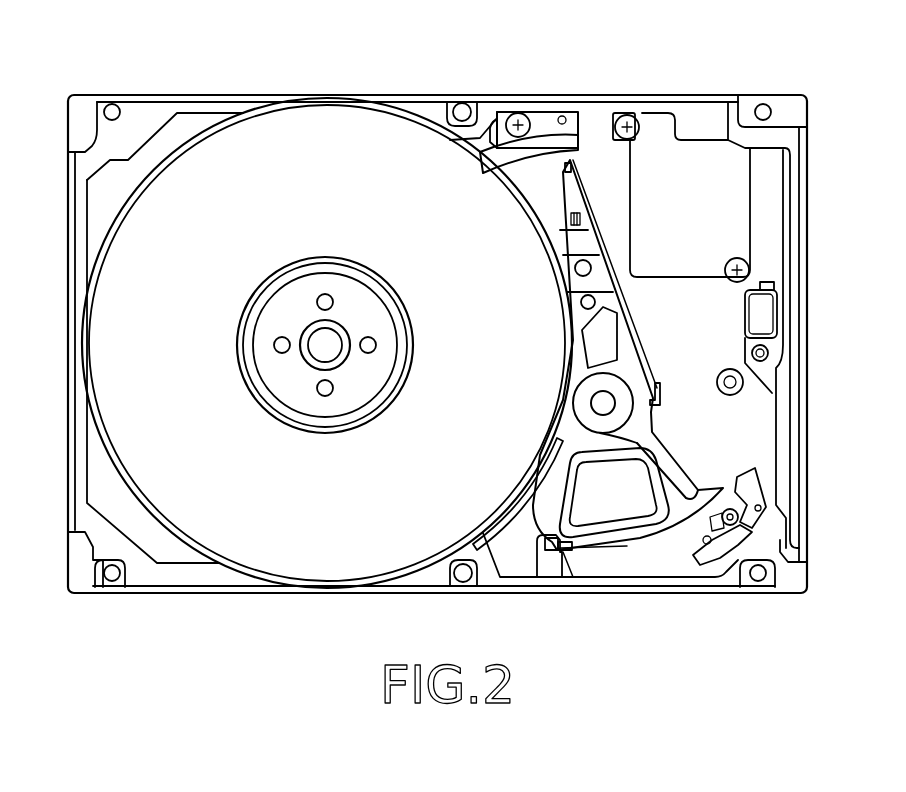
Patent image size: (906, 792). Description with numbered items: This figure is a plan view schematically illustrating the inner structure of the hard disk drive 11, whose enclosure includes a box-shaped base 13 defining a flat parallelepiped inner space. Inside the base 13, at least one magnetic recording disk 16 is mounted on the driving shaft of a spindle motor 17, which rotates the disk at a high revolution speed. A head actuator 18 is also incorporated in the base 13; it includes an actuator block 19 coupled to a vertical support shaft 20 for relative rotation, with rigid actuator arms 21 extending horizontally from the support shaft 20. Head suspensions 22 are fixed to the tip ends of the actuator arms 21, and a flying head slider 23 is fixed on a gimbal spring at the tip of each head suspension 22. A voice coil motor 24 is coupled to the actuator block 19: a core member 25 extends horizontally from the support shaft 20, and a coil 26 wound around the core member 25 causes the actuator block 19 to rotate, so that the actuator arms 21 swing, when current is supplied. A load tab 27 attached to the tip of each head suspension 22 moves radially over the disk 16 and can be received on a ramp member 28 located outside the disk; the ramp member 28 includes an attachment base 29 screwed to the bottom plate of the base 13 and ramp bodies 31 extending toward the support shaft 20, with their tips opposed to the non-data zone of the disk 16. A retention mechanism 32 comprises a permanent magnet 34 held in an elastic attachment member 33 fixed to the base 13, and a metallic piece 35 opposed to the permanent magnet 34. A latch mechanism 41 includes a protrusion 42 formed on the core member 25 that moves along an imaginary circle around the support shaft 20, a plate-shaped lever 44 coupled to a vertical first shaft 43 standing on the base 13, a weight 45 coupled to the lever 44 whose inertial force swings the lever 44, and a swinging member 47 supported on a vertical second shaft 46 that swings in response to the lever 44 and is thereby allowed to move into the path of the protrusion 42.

The hard disk drive 11 is at (148, 85).
The base 13 is at (70, 210).
The magnetic recording disk 16 is at (82, 332).
The spindle motor 17 is at (331, 362).
The head actuator 18 is at (600, 366).
The actuator block 19 is at (652, 415).
The support shaft 20 is at (596, 406).
The actuator arms 21 is at (573, 325).
The head suspension 22 is at (560, 212).
The flying head slider 23 is at (563, 162).
The voice coil motor 24 is at (526, 497).
The core member 25 is at (627, 546).
The coil 26 is at (572, 503).
The load tab 27 is at (572, 157).
The ramp member 28 is at (502, 112).
The attachment base 29 is at (537, 112).
The ramp body 31 is at (502, 176).
The retention mechanism 32 is at (533, 572).
The attachment member 33 is at (552, 577).
The permanent magnet 34 is at (545, 548).
The metallic piece 35 is at (567, 550).
The latch mechanism 41 is at (782, 495).
The protrusion 42 is at (722, 488).
The first shaft 43 is at (752, 353).
The lever 44 is at (782, 413).
The weight 45 is at (778, 318).
The second shaft 46 is at (757, 527).
The swinging member 47 is at (755, 462).